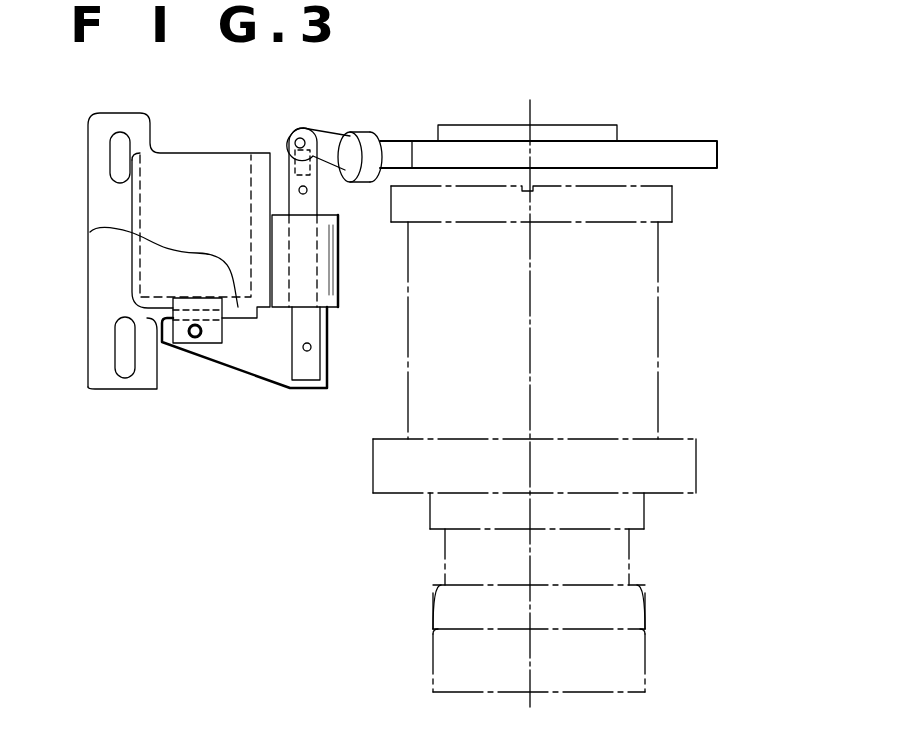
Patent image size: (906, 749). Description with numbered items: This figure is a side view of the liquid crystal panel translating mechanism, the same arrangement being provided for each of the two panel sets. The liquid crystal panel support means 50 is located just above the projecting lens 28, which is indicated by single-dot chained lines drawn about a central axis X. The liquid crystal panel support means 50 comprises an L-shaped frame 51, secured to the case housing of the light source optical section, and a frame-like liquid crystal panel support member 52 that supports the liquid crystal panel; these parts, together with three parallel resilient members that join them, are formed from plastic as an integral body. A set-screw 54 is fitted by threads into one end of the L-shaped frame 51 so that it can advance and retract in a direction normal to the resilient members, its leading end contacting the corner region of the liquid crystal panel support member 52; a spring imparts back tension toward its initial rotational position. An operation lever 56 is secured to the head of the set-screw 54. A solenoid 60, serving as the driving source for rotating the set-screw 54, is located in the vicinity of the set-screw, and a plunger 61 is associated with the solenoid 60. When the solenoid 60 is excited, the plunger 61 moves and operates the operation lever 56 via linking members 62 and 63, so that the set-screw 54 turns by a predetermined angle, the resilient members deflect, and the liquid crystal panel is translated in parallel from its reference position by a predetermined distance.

The projecting lens 28 is at (658, 373).
The liquid crystal panel support means 50 is at (743, 122).
The L-shaped frame 51 is at (703, 159).
The liquid crystal panel support member 52 is at (587, 132).
The set-screw 54 is at (377, 133).
The operation lever 56 is at (316, 130).
The solenoid 60 is at (157, 268).
The plunger 61 is at (197, 345).
The linking member 62 is at (243, 362).
The linking member 63 is at (312, 191).
The axis X is at (530, 297).